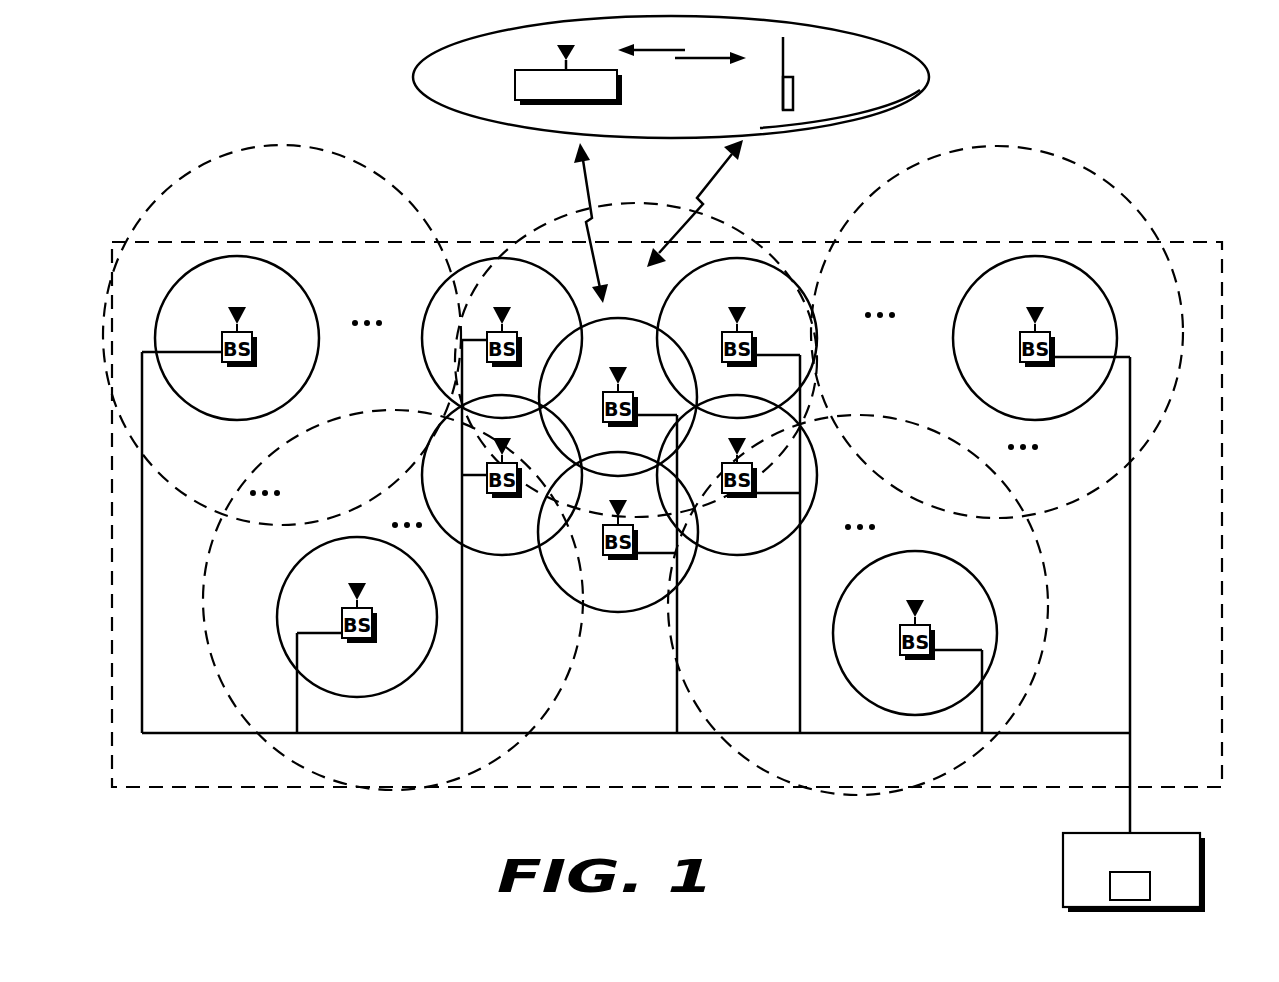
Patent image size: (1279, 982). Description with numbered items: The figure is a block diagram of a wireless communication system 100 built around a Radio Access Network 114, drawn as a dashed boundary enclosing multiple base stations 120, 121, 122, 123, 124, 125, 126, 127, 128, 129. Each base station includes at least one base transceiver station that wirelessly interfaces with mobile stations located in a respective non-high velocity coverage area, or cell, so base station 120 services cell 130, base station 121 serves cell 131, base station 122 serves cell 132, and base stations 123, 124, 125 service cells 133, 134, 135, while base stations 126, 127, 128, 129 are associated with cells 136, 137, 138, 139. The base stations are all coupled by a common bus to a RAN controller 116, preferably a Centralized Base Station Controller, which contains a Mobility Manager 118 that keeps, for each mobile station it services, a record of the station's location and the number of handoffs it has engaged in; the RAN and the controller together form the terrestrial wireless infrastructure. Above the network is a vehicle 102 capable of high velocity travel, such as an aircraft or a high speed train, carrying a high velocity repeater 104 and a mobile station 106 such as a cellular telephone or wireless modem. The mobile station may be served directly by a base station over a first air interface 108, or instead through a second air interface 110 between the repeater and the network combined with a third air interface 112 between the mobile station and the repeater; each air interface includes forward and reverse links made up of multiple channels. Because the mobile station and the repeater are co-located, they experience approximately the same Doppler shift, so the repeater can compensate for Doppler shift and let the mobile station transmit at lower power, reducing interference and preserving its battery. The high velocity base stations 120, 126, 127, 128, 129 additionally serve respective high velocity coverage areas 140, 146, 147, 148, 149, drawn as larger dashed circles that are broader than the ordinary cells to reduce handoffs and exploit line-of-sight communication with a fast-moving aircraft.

The wireless communication system 100 is at (413, 857).
The vehicle 102 is at (830, 125).
The high velocity repeater 104 is at (620, 90).
The mobile station 106 is at (786, 55).
The first air interface 108 is at (716, 172).
The second air interface 110 is at (588, 165).
The third air interface 112 is at (680, 56).
The Radio Access Network 114 is at (1215, 240).
The RAN controller 116 is at (1200, 860).
The Mobility Manager 118 is at (1150, 886).
The base station 120 is at (603, 406).
The base station 121 is at (520, 345).
The base station 122 is at (508, 496).
The base station 123 is at (615, 558).
The base station 124 is at (716, 342).
The base station 125 is at (738, 496).
The base station 126 is at (240, 365).
The base station 127 is at (357, 641).
The base station 128 is at (915, 658).
The base station 129 is at (1035, 365).
The cell 130 is at (595, 325).
The cell 131 is at (430, 302).
The cell 132 is at (490, 555).
The cell 133 is at (615, 612).
The cell 134 is at (657, 310).
The cell 135 is at (738, 555).
The cell 136 is at (170, 302).
The cell 137 is at (283, 582).
The cell 138 is at (849, 582).
The cell 139 is at (966, 302).
The high velocity coverage area 140 is at (532, 230).
The high velocity coverage area 146 is at (403, 192).
The high velocity coverage area 147 is at (497, 755).
The high velocity coverage area 148 is at (990, 752).
The high velocity coverage area 149 is at (1113, 192).